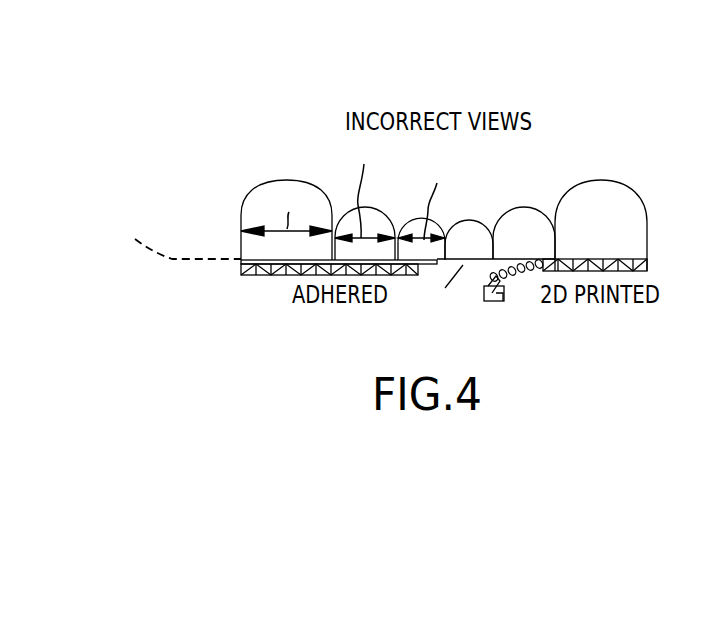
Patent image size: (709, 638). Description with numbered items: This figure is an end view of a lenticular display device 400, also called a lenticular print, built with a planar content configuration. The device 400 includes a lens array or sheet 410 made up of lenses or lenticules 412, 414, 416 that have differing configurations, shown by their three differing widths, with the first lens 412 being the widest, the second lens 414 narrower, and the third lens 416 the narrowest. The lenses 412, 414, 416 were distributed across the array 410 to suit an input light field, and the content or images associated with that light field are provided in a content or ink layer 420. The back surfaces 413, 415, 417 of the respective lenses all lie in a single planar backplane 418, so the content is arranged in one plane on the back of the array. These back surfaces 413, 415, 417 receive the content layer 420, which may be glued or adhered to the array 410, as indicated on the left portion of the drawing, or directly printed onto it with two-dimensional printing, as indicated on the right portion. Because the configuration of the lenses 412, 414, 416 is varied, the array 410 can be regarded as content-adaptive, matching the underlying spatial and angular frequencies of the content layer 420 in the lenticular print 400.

The lenticular display device 400 is at (233, 145).
The lens array 410 is at (205, 213).
The lens 412 is at (241, 212).
The back surface of lens 413 is at (270, 260).
The lens 414 is at (360, 205).
The back surface of lens 415 is at (339, 259).
The lens 416 is at (441, 235).
The back surface of lens 417 is at (402, 259).
The planar backplane 418 is at (170, 237).
The content layer 420 is at (218, 277).